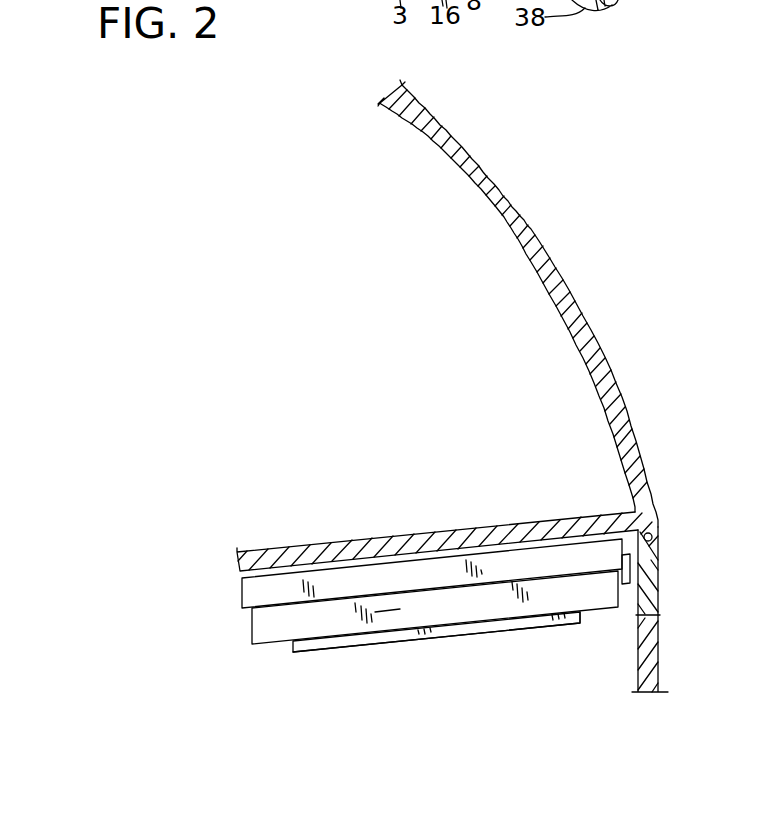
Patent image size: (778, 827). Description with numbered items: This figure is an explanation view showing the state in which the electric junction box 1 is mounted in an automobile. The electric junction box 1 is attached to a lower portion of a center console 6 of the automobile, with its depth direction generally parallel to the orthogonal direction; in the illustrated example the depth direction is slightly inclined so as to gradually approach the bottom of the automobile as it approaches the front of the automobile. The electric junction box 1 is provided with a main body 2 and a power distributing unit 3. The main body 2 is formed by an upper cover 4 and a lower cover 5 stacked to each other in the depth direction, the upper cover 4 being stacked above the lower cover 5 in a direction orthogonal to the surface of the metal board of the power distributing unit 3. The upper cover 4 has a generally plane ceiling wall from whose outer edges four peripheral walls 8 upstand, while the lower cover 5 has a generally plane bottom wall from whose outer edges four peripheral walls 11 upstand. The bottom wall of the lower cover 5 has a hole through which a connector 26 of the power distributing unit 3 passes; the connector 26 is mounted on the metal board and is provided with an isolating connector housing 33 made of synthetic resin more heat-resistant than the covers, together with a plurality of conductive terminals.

The electric junction box 1 is at (448, 648).
The main body 2 is at (168, 605).
The power distributing unit 3 is at (323, 653).
The upper cover 4 is at (241, 600).
The lower cover 5 is at (250, 634).
The center console 6 is at (558, 254).
The peripheral wall 8 is at (351, 587).
The peripheral wall 11 is at (387, 612).
The connector 26 is at (550, 625).
The connector housing 33 is at (521, 622).